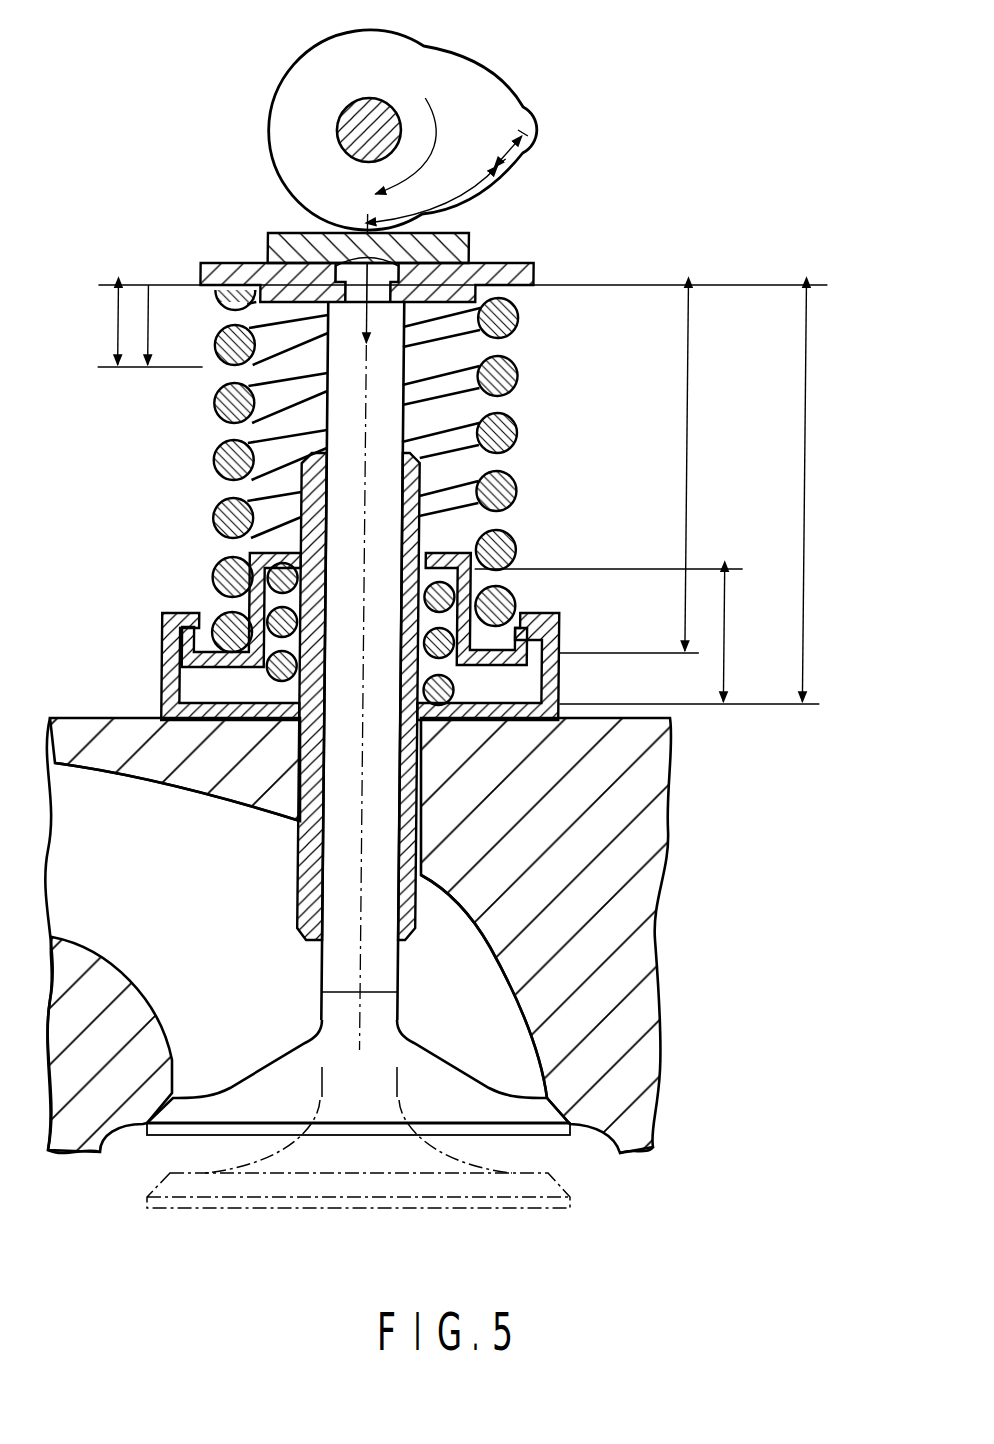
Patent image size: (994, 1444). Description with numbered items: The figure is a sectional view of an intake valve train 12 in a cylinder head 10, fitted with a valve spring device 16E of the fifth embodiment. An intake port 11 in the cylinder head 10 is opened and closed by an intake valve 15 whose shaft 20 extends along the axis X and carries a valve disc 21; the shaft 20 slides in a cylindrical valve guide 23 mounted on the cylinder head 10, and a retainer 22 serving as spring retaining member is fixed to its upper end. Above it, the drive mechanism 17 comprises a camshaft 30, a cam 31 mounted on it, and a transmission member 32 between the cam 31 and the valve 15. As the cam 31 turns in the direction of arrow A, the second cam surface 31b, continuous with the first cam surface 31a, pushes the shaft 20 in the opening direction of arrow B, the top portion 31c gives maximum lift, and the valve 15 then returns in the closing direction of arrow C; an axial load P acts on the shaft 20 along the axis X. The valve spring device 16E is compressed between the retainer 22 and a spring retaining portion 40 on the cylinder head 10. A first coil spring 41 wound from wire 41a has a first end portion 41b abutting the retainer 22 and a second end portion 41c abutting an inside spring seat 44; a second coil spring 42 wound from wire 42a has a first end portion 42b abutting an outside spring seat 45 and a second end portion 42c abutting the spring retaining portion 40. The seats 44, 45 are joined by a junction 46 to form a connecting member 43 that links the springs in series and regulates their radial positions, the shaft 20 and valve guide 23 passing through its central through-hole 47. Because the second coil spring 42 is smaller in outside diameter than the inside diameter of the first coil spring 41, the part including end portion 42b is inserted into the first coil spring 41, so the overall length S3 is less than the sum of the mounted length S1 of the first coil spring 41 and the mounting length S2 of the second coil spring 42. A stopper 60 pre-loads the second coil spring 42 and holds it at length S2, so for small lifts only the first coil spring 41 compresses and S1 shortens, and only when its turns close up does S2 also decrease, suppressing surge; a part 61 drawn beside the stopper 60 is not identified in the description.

The cylinder head 10 is at (623, 855).
The intake port 11 is at (512, 1062).
The intake valve train 12 is at (710, 219).
The intake valve 15 is at (402, 960).
The valve spring device 16E is at (146, 456).
The drive mechanism 17 is at (247, 176).
The shaft 20 is at (382, 517).
The valve disc 21 is at (365, 1113).
The retainer 22 is at (483, 267).
The valve guide 23 is at (312, 765).
The camshaft 30 is at (358, 137).
The cam 31 is at (471, 88).
The first cam surface 31a is at (457, 203).
The second cam surface 31b is at (524, 153).
The top portion 31c is at (521, 134).
The transmission member 32 is at (293, 250).
The spring retaining portion 40 is at (464, 719).
The first coil spring 41 is at (517, 490).
The wire 41a is at (512, 433).
The first end portion 41b is at (237, 285).
The second end portion 41c is at (214, 627).
The second coil spring 42 is at (478, 579).
The wire 42a is at (444, 678).
The first end portion 42b is at (255, 567).
The second end portion 42c is at (176, 790).
The connecting member 43 is at (210, 654).
The inside spring seat 44 is at (296, 553).
The outside spring seat 45 is at (225, 672).
The junction 46 is at (262, 603).
The through-hole 47 is at (283, 556).
The stopper 60 is at (540, 620).
The stopper member 61 is at (556, 678).
The arrow A is at (440, 124).
The arrow B is at (150, 319).
The arrow C is at (117, 332).
The axial load P is at (404, 309).
The axis X is at (368, 367).
The length of first coil spring S1 is at (690, 447).
The length of second coil spring S2 is at (730, 619).
The length of valve spring device S3 is at (808, 482).